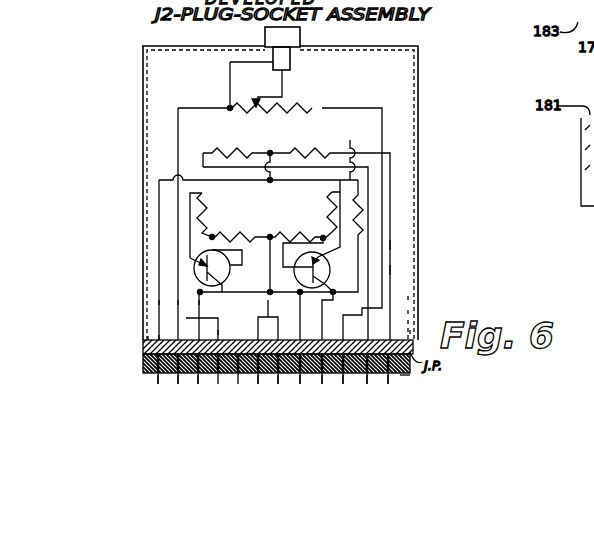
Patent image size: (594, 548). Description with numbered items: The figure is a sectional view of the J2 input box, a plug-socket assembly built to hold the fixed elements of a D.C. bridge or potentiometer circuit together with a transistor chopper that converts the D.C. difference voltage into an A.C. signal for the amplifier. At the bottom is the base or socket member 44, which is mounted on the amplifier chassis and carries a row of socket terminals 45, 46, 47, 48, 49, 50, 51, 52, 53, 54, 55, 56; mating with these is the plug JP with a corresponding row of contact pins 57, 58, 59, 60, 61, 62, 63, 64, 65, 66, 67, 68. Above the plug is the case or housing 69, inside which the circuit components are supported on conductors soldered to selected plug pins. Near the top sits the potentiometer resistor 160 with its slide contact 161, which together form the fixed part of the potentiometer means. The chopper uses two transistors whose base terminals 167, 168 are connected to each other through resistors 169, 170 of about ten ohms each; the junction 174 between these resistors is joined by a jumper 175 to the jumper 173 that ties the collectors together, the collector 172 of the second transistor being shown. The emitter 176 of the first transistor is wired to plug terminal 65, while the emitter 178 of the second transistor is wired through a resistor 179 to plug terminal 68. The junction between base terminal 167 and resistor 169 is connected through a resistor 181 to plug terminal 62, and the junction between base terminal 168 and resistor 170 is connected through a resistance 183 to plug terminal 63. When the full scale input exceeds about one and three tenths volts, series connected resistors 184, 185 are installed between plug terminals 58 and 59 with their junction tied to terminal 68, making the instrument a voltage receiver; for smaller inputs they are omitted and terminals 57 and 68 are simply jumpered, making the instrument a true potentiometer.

The base or socket member 44 is at (143, 358).
The socket terminal 45 is at (405, 378).
The socket terminal 46 is at (395, 382).
The socket terminal 47 is at (375, 384).
The socket terminal 48 is at (350, 384).
The socket terminal 49 is at (330, 384).
The socket terminal 50 is at (300, 384).
The socket terminal 51 is at (278, 384).
The socket terminal 52 is at (258, 384).
The socket terminal 53 is at (199, 382).
The socket terminal 54 is at (178, 383).
The socket terminal 55 is at (158, 380).
The socket terminal 56 is at (150, 372).
The contact pin 57 is at (412, 332).
The contact pin 58 is at (408, 337).
The contact pin 59 is at (408, 330).
The contact pin 60 is at (408, 322).
The contact pin 61 is at (408, 312).
The contact pin 62 is at (408, 298).
The contact pin 63 is at (228, 340).
The contact pin 64 is at (196, 340).
The contact pin 65 is at (183, 340).
The contact pin 66 is at (160, 340).
The contact pin 67 is at (150, 340).
The contact pin 68 is at (148, 337).
The case or housing 69 is at (418, 165).
The potentiometer resistor 160 is at (320, 107).
The slide contact 161 is at (283, 96).
The base terminal 167 is at (228, 262).
The base terminal 168 is at (304, 281).
The resistor 169 is at (248, 231).
The resistor 170 is at (316, 232).
The collector 172 is at (402, 270).
The jumper 173 is at (256, 296).
The junction 174 is at (278, 216).
The jumper 175 is at (268, 283).
The emitter 176 is at (188, 250).
The emitter 178 is at (395, 245).
The resistor 179 is at (358, 138).
The resistor 181 is at (206, 204).
The resistance 183 is at (329, 205).
The resistor 184 is at (297, 149).
The resistor 185 is at (238, 148).